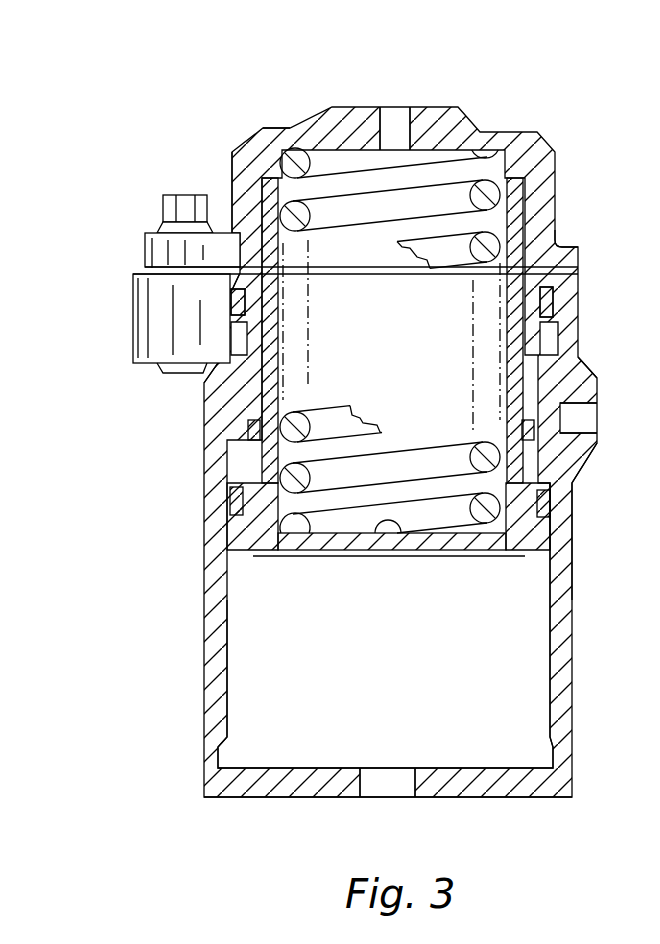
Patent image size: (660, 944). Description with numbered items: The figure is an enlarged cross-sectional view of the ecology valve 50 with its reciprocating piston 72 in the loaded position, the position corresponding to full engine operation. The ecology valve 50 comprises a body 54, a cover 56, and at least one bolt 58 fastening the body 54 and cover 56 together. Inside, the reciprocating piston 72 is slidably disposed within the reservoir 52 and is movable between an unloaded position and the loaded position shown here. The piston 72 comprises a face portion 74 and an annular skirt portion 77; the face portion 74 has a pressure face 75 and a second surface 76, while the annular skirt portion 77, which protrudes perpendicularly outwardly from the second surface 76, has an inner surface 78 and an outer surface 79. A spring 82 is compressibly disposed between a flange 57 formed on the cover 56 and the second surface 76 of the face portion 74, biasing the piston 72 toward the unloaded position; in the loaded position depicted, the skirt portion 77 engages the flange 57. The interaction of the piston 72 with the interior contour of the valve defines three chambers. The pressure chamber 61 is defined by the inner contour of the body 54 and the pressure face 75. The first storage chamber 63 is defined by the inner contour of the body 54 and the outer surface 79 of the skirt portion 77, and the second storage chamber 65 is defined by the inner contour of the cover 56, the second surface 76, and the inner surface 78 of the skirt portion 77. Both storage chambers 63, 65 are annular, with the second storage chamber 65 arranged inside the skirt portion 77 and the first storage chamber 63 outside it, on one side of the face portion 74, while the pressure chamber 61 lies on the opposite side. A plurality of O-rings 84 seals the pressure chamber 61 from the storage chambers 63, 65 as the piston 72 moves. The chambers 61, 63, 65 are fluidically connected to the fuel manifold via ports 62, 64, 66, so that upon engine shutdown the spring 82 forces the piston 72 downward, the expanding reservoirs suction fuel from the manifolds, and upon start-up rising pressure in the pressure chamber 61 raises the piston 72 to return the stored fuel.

The ecology valve 50 is at (361, 442).
The reservoir 52 is at (360, 340).
The body 54 is at (210, 400).
The cover 56 is at (228, 188).
The flange 57 is at (518, 165).
The bolt 58 is at (190, 207).
The pressure chamber 61 is at (503, 733).
The port 62 is at (400, 800).
The first storage chamber 63 is at (548, 455).
The port 64 is at (590, 418).
The second storage chamber 65 is at (445, 363).
The port 66 is at (400, 122).
The reciprocating piston 72 is at (250, 530).
The face portion 74 is at (470, 547).
The pressure face 75 is at (440, 547).
The second surface 76 is at (417, 545).
The annular skirt portion 77 is at (515, 217).
The inner surface 78 is at (502, 302).
The outer surface 79 is at (520, 257).
The spring 82 is at (328, 428).
The O-rings 84 is at (255, 428).